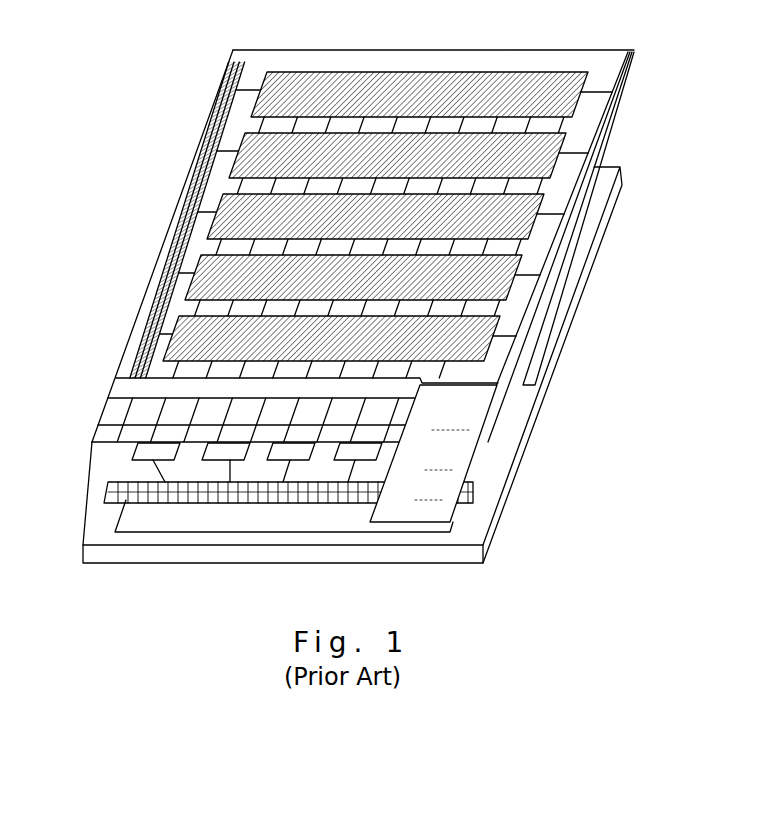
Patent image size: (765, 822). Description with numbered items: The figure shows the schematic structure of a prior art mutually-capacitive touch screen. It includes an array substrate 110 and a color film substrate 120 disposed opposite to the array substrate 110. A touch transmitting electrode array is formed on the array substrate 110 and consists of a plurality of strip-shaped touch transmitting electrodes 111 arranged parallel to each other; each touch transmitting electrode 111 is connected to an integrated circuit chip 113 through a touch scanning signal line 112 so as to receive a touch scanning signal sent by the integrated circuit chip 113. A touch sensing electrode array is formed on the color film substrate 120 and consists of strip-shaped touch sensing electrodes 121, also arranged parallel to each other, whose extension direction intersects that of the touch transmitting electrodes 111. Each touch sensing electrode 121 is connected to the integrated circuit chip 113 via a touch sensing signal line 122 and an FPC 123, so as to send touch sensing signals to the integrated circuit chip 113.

The array substrate 110 is at (618, 213).
The touch transmitting electrodes 111 is at (157, 450).
The touch scanning signal line 112 is at (153, 470).
The integrated circuit chip 113 is at (108, 490).
The color film substrate 120 is at (607, 73).
The touch sensing electrodes 121 is at (400, 82).
The touch sensing signal line 122 is at (240, 88).
The FPC (flexible printed circuit) 123 is at (440, 457).